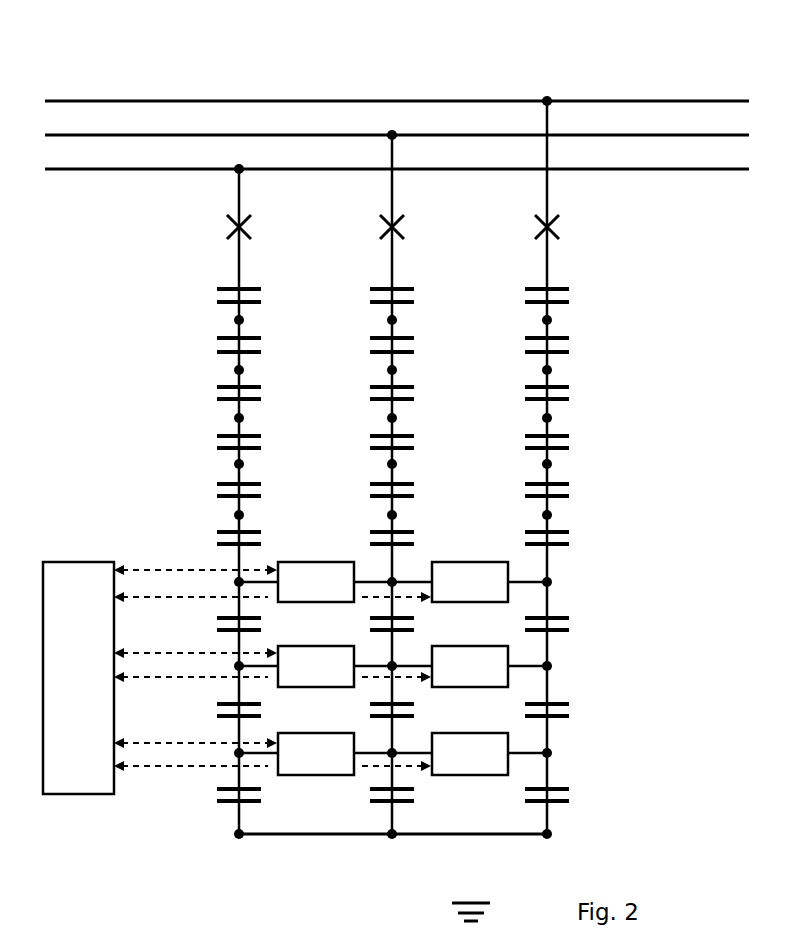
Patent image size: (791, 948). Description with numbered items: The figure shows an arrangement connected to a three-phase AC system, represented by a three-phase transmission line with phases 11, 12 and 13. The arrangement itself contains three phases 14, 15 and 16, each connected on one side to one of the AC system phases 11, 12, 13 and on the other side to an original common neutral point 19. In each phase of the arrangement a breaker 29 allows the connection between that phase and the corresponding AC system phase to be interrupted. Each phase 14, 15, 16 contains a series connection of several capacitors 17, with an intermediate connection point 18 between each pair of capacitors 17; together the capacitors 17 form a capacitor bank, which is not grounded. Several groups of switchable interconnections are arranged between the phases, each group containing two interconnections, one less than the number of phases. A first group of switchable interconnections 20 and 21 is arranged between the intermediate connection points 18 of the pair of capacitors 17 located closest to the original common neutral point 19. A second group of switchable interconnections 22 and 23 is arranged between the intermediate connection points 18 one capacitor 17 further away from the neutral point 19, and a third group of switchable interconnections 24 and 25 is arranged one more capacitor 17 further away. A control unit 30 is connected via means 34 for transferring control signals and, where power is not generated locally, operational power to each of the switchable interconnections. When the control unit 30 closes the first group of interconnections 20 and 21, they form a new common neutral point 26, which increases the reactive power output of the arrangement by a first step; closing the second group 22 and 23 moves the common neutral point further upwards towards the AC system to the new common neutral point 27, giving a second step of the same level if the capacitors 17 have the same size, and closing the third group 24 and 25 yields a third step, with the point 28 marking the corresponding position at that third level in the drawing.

The phase of the AC system 11 is at (195, 100).
The phase of the AC system 12 is at (150, 135).
The phase of the AC system 13 is at (129, 170).
The phase of the arrangement 14 is at (239, 270).
The phase of the arrangement 15 is at (392, 270).
The phase of the arrangement 16 is at (547, 270).
The capacitor 17 is at (222, 386).
The intermediate connection point 18 is at (239, 464).
The original common neutral point 19 is at (363, 834).
The switchable interconnection 20 is at (331, 767).
The switchable interconnection 21 is at (485, 767).
The switchable interconnection 22 is at (331, 679).
The switchable interconnection 23 is at (485, 679).
The switchable interconnection 24 is at (331, 595).
The switchable interconnection 25 is at (485, 595).
The new common neutral point 26 is at (415, 752).
The new common neutral point 27 is at (372, 663).
The measuring tap 28 is at (418, 580).
The breaker 29 is at (236, 226).
The control unit 30 is at (78, 678).
The means for transferring control signals and/or operational power 34 is at (167, 782).